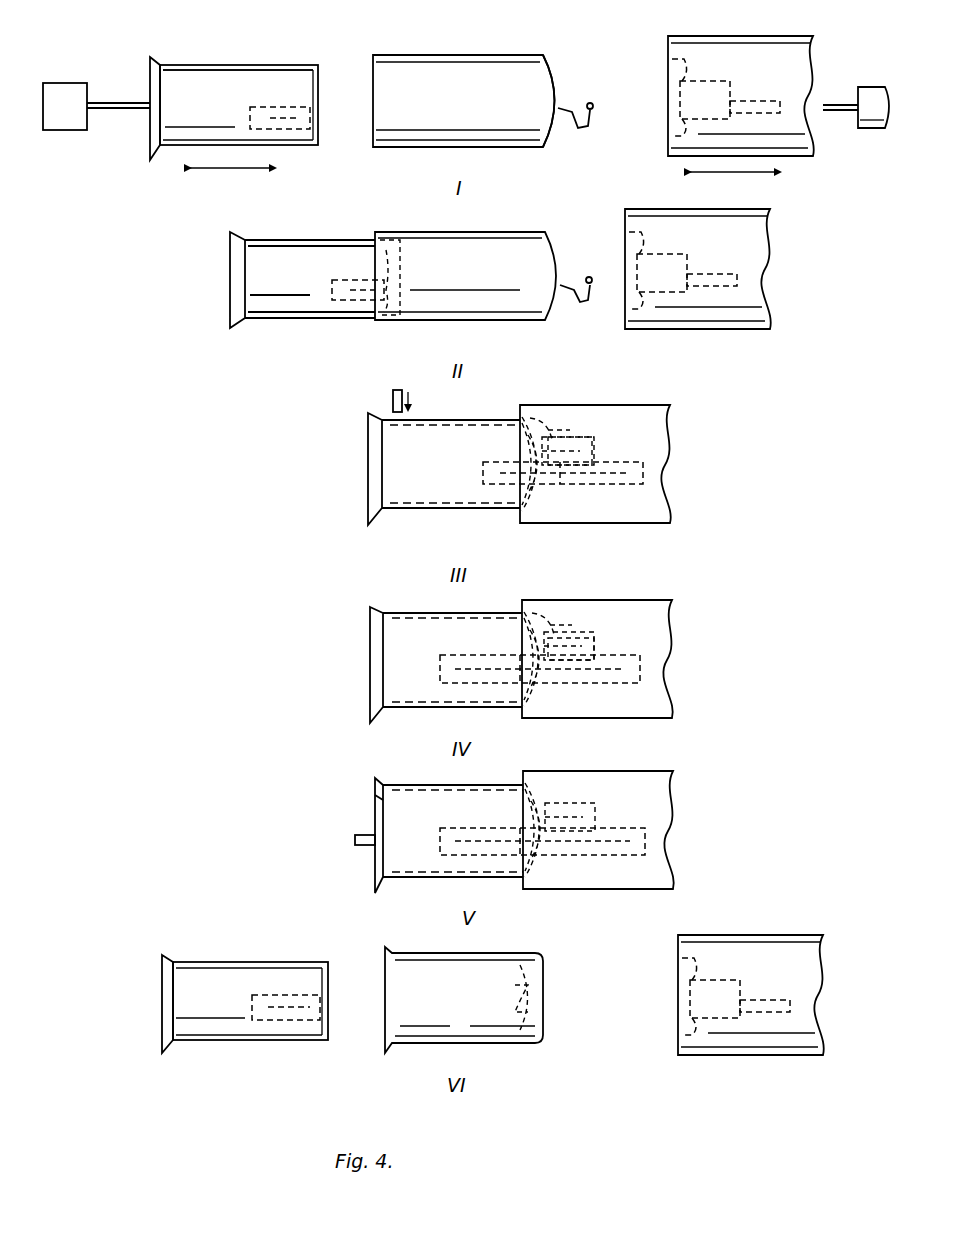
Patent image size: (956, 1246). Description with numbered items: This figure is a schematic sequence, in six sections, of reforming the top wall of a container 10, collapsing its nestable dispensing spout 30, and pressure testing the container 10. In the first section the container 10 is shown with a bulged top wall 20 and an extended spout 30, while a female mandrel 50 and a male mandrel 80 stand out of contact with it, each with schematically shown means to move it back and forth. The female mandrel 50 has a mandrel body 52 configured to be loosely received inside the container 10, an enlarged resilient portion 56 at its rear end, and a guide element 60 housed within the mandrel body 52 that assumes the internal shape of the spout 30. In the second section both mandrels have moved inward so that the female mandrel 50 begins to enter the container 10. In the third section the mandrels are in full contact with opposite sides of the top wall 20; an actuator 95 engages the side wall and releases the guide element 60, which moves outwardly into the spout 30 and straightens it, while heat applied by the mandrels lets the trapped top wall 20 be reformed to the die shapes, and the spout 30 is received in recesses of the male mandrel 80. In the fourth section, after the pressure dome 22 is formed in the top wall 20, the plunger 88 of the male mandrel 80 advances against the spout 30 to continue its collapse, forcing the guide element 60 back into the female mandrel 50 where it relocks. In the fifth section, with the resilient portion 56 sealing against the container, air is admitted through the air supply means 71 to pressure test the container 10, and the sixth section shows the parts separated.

The container 10 is at (444, 46).
The top wall 20 is at (568, 77).
The dispensing spout 30 is at (561, 138).
The pressure dome 22 is at (548, 440).
The female mandrel 50 is at (222, 58).
The mandrel body 52 is at (247, 67).
The enlarged resilient portion 56 is at (375, 800).
The guide element 60 is at (287, 132).
The air supply means 71 is at (358, 838).
The male mandrel 80 is at (728, 27).
The plunger 88 is at (618, 480).
The actuator 95 is at (392, 398).